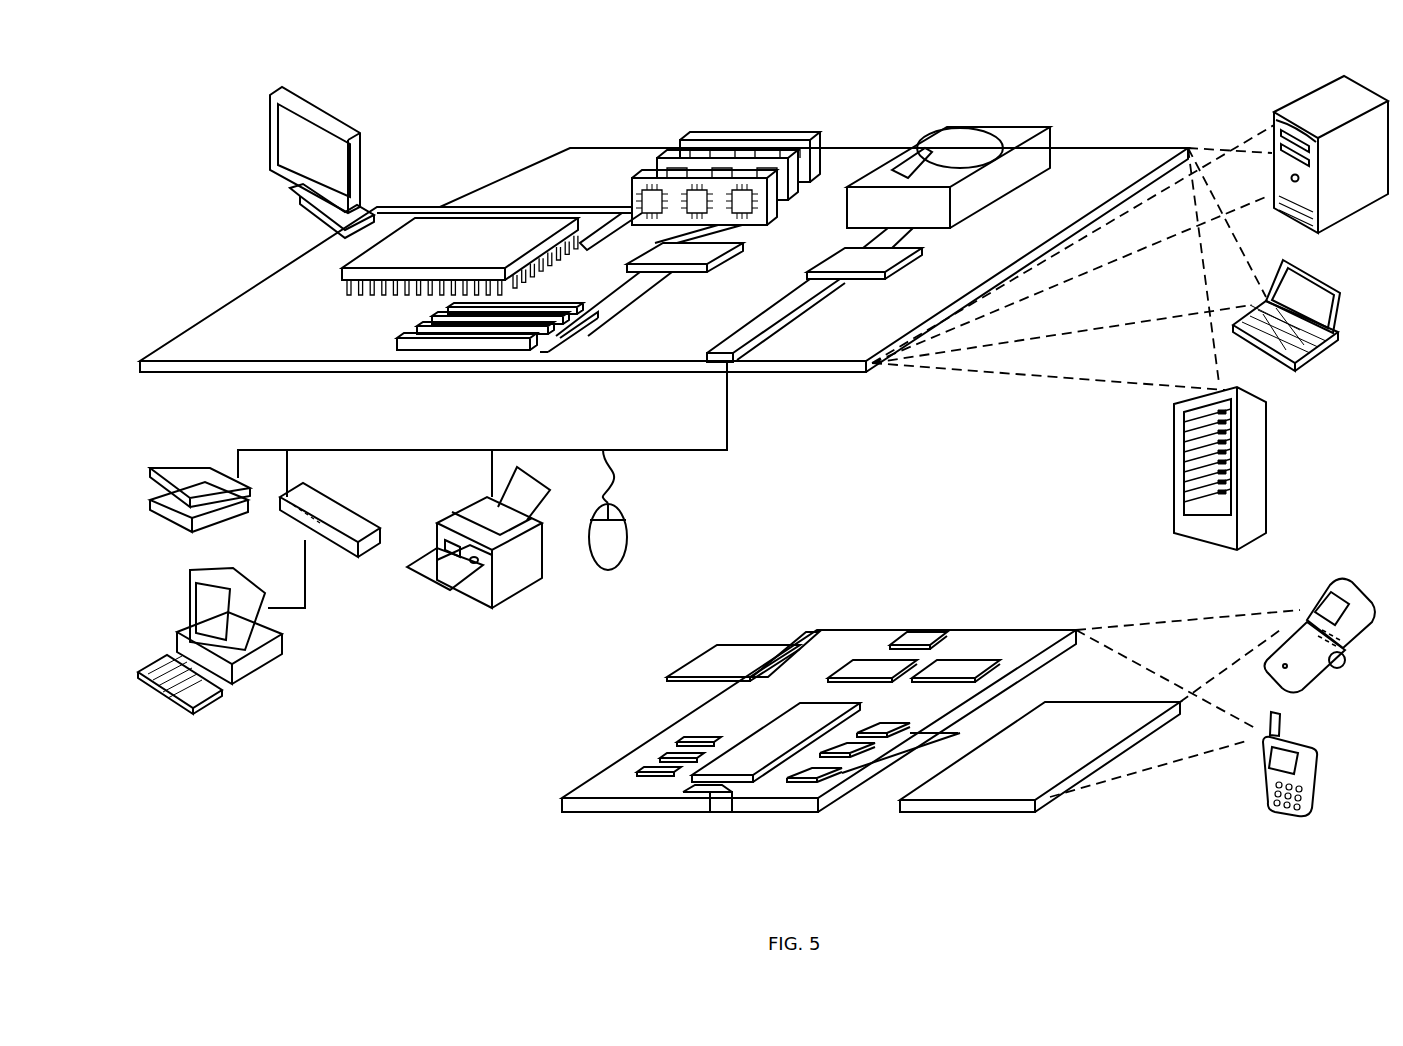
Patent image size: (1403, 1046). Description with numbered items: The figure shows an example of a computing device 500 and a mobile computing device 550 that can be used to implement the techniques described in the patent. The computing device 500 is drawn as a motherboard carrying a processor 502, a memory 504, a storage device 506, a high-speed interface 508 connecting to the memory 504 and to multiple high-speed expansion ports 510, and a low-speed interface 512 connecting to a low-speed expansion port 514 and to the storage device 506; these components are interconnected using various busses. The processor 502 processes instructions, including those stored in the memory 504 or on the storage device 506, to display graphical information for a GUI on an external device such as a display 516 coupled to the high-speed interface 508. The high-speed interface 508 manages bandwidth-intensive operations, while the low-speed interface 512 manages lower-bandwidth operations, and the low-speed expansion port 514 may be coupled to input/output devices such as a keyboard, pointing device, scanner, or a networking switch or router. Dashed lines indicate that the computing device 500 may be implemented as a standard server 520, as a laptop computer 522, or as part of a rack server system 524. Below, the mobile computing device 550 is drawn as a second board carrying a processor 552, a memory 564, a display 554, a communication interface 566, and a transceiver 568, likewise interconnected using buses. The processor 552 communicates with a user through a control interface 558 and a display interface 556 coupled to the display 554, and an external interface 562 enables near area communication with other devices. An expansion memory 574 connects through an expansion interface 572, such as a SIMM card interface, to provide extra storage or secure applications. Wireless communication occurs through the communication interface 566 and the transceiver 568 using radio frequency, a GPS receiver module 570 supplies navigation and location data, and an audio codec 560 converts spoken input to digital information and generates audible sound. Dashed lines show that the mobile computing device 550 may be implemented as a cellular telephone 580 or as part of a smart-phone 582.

The computing device 500 is at (770, 391).
The processor 502 is at (342, 270).
The memory 504 is at (689, 139).
The storage device 506 is at (933, 127).
The high-speed interface 508 is at (662, 253).
The high-speed expansion ports 510 is at (423, 333).
The low-speed interface 512 is at (843, 256).
The low-speed expansion port 514 is at (735, 362).
The display 516 is at (272, 96).
The standard server 520 is at (1274, 130).
The laptop computer 522 is at (1346, 296).
The rack server system 524 is at (1176, 500).
The mobile computing device 550 is at (918, 711).
The processor 552 is at (748, 767).
The display 554 is at (995, 787).
The display interface 556 is at (822, 782).
The control interface 558 is at (855, 753).
The audio codec 560 is at (883, 730).
The external interface 562 is at (712, 803).
The memory 564 is at (657, 753).
The communication interface 566 is at (875, 668).
The transceiver 568 is at (957, 668).
The GPS receiver module 570 is at (920, 633).
The expansion interface 572 is at (803, 642).
The expansion memory 574 is at (722, 646).
The cellular telephone 580 is at (1327, 582).
The smart-phone 582 is at (1263, 772).